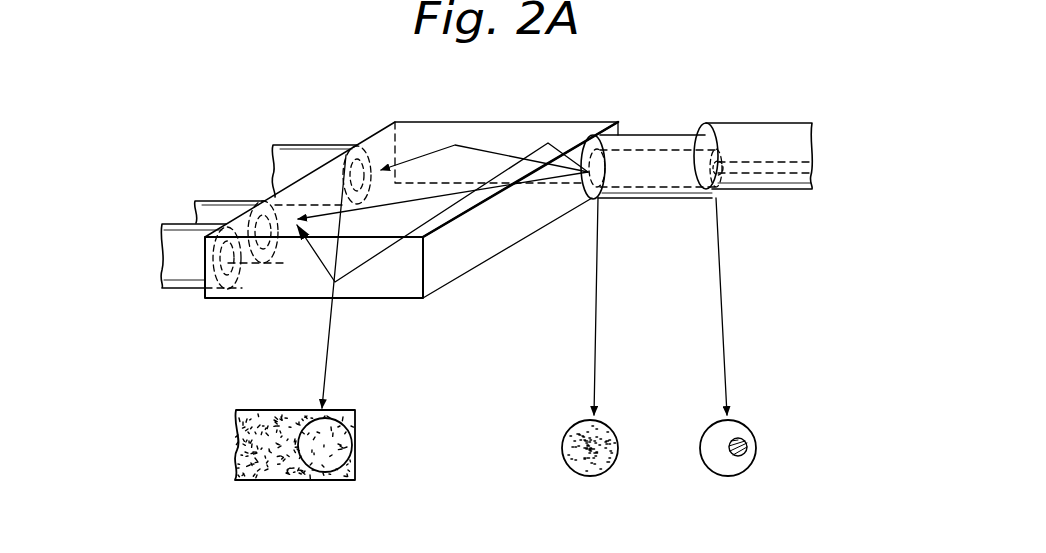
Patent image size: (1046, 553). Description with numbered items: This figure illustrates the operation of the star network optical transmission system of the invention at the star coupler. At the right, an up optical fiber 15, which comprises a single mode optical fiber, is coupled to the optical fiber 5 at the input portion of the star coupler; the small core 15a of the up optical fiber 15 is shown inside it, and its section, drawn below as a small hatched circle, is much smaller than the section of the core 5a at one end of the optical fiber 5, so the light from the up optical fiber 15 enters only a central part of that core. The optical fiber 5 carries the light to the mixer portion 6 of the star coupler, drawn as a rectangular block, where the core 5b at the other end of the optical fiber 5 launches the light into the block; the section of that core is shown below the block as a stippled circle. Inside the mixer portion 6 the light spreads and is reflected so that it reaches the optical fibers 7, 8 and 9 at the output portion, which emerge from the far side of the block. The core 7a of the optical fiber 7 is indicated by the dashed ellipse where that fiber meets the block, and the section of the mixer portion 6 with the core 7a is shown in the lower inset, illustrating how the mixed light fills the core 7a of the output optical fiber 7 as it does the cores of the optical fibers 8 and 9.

The optical fiber at the input portion 5 is at (658, 134).
The core of one end of the optical fiber at the input portion 5a is at (655, 209).
The core of the other end of the optical fiber at the input portion 5b is at (576, 306).
The mixer portion 6 is at (407, 300).
The optical fiber at the output portion 7 is at (296, 144).
The core of the optical fiber at the output portion 7a is at (367, 146).
The optical fiber at the output portion 8 is at (232, 200).
The optical fiber at the output portion 9 is at (178, 222).
The up optical fiber 15 is at (738, 122).
The core of the up optical fiber 15a is at (762, 201).